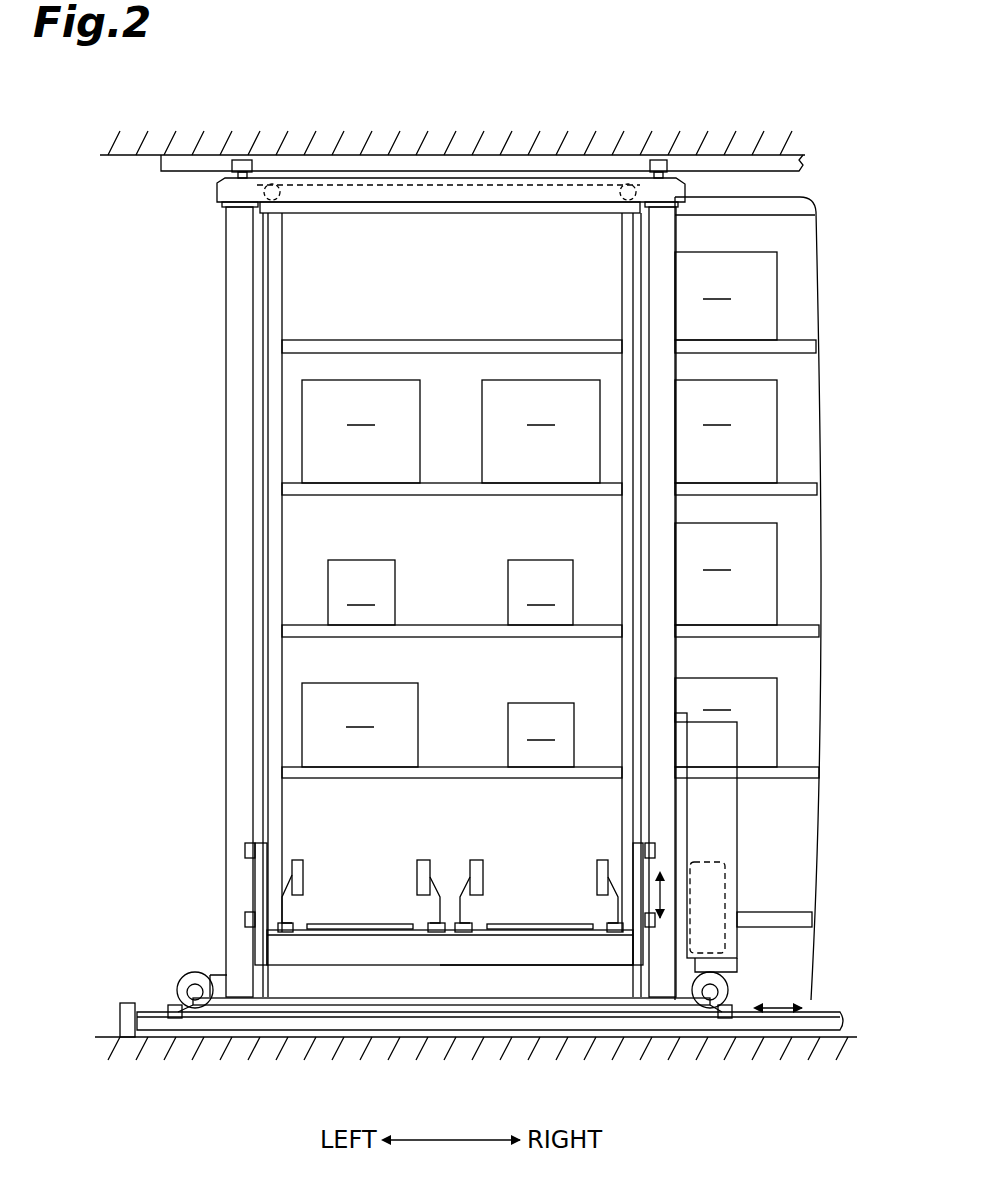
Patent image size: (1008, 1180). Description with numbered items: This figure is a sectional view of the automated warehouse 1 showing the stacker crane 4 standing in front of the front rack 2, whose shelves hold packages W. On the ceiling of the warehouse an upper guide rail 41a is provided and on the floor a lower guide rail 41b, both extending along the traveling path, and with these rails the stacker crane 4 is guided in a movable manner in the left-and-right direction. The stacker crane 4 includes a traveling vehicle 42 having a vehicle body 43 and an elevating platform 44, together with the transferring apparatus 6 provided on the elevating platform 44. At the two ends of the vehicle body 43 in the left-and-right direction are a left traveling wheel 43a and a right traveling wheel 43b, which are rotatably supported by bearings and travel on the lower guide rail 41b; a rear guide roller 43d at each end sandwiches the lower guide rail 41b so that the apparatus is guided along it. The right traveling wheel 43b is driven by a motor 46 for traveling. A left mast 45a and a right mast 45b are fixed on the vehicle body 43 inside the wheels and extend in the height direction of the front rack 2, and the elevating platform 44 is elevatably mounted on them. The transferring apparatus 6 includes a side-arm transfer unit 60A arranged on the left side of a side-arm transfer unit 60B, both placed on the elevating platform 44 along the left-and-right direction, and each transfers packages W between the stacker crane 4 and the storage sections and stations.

The automated warehouse 1 is at (788, 121).
The front rack 2 is at (796, 484).
The stacker crane 4 is at (508, 647).
The transferring apparatus 6 is at (450, 857).
The upper guide rail 41a is at (183, 165).
The lower guide rail 41b is at (150, 1013).
The traveling vehicle 42 is at (250, 936).
The vehicle body 43 is at (512, 993).
The left traveling wheel 43a is at (190, 973).
The right traveling wheel 43b is at (727, 987).
The rear guide roller 43d is at (175, 1018).
The elevating platform 44 is at (443, 948).
The left mast 45a is at (226, 549).
The right mast 45b is at (676, 504).
The motor 46 is at (725, 885).
The side-arm transfer unit 60A is at (304, 853).
The side-arm transfer unit 60B is at (604, 856).